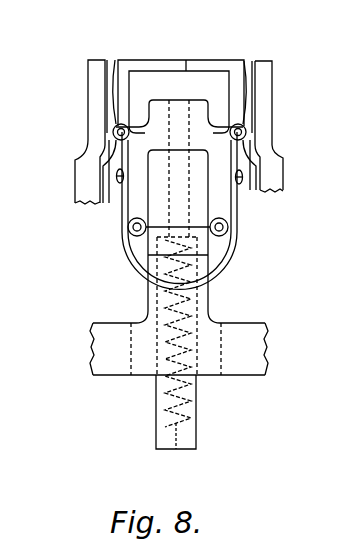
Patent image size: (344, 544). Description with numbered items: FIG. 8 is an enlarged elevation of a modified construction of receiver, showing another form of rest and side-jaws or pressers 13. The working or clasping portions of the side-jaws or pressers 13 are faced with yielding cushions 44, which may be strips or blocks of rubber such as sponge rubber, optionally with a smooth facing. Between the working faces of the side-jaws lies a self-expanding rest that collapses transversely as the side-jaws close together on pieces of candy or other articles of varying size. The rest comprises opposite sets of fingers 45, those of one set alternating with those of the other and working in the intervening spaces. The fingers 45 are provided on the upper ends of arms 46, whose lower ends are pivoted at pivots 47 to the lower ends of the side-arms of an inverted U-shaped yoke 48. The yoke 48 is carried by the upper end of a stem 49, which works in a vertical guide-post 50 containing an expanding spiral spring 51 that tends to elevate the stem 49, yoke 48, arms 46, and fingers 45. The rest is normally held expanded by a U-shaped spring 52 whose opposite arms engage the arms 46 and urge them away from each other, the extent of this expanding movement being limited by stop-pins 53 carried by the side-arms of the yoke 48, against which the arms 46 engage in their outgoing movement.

The side bar 13 is at (88, 80).
The yielding cushion 44 is at (111, 59).
The finger 45 is at (146, 59).
The arm 46 is at (179, 106).
The pivot 47 is at (128, 228).
The inverted U-shaped yoke 48 is at (158, 105).
The stem 49 is at (126, 190).
The vertical guide-post 50 is at (156, 402).
The expanding spiral spring 51 is at (186, 396).
The U-shaped spring 52 is at (224, 274).
The stop-pin 53 is at (117, 129).